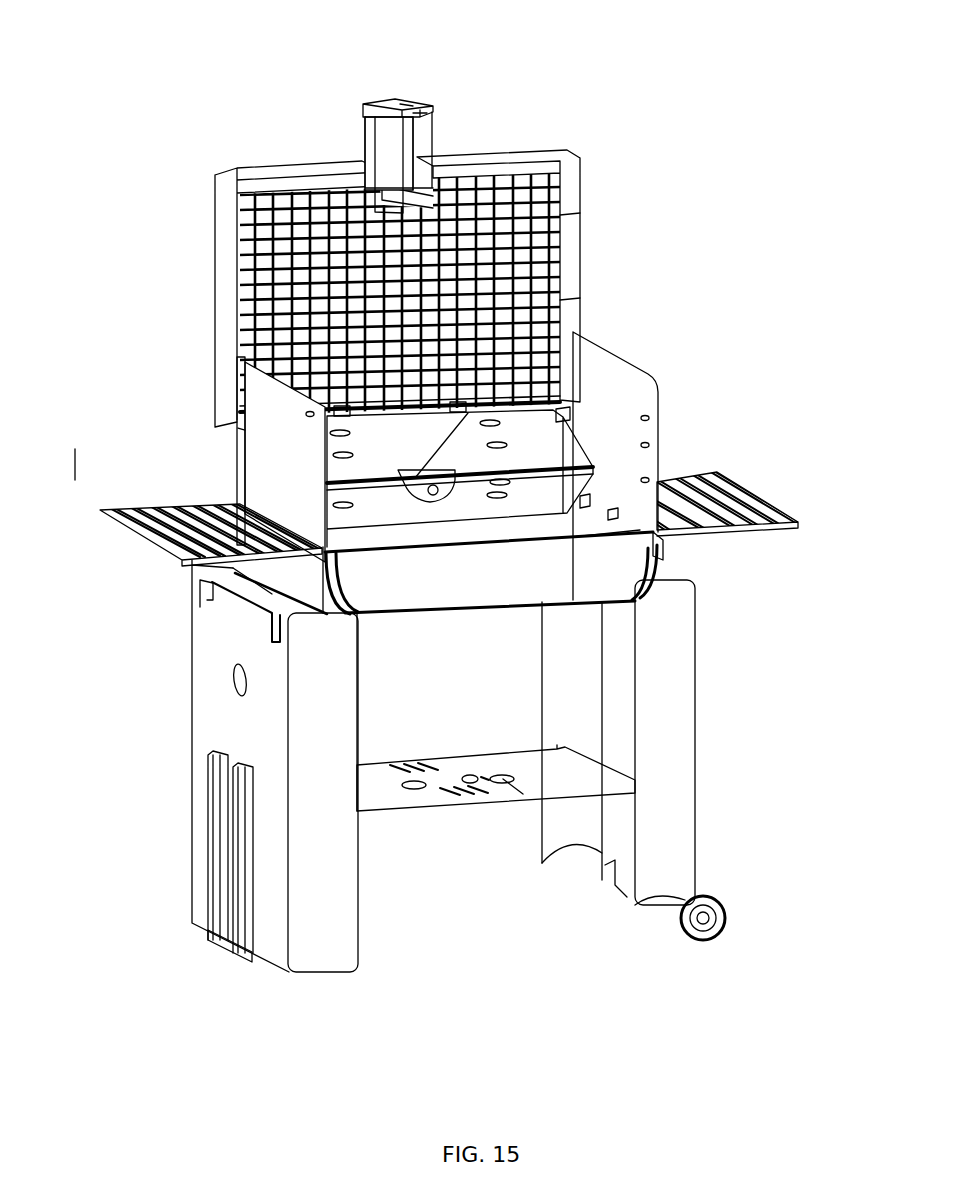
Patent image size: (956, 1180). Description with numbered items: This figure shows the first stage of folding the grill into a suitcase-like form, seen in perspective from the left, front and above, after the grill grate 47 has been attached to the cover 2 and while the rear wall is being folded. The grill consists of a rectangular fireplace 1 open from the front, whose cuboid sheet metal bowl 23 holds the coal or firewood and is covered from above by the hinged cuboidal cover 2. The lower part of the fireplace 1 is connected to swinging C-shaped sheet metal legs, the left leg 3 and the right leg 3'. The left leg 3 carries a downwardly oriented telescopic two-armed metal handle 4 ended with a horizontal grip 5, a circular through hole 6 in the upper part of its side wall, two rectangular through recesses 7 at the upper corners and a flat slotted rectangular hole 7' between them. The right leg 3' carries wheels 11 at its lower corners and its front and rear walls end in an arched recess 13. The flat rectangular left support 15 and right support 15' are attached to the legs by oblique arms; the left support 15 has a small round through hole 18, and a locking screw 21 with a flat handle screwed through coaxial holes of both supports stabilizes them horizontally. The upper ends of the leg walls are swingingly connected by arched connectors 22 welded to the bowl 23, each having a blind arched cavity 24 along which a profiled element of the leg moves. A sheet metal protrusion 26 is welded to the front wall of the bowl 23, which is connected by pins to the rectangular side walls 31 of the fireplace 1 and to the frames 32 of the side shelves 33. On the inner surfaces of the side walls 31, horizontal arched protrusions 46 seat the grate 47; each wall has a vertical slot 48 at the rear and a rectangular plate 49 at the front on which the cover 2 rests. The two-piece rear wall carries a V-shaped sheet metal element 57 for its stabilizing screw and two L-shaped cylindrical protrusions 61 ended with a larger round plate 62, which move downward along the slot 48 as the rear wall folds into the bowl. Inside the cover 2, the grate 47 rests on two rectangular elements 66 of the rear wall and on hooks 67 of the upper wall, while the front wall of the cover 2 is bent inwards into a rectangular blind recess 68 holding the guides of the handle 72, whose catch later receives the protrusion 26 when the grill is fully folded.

The fireplace 1 is at (558, 527).
The cover 2 is at (560, 158).
The left leg 3 is at (175, 766).
The right leg 3' is at (711, 742).
The telescopic two-armed metal handle 4 is at (217, 940).
The grip 5 is at (208, 945).
The circular through hole 6 is at (300, 692).
The rectangular through recesses 7 is at (196, 643).
The flat slotted rectangular hole 7' is at (151, 630).
The wheels 11 is at (695, 915).
The arched recess 13 is at (630, 908).
The left support 15 is at (470, 807).
The right support 15' is at (456, 895).
The round through hole 18 is at (414, 789).
The locking screw 21 is at (472, 780).
The arched connectors 22 is at (235, 573).
The bowl 23 is at (632, 540).
The blind arched cavity 24 is at (233, 573).
The sheet metal protrusion 26 is at (490, 542).
The side walls 31 is at (262, 426).
The frames 32 is at (190, 566).
The side shelves 33 is at (785, 520).
The horizontal arched protrusions 46 is at (645, 480).
The grill grate 47 is at (558, 215).
The vertical slot 48 is at (236, 388).
The rectangular plate 49 is at (310, 415).
The V-shaped sheet metal element 57 is at (568, 315).
The cylindrical protrusions 61 is at (238, 432).
The round plate 62 is at (55, 466).
The rectangular elements 66 is at (455, 408).
The hooks 67 is at (262, 216).
The rectangular blind recess 68 is at (400, 100).
The handle 72 is at (427, 114).